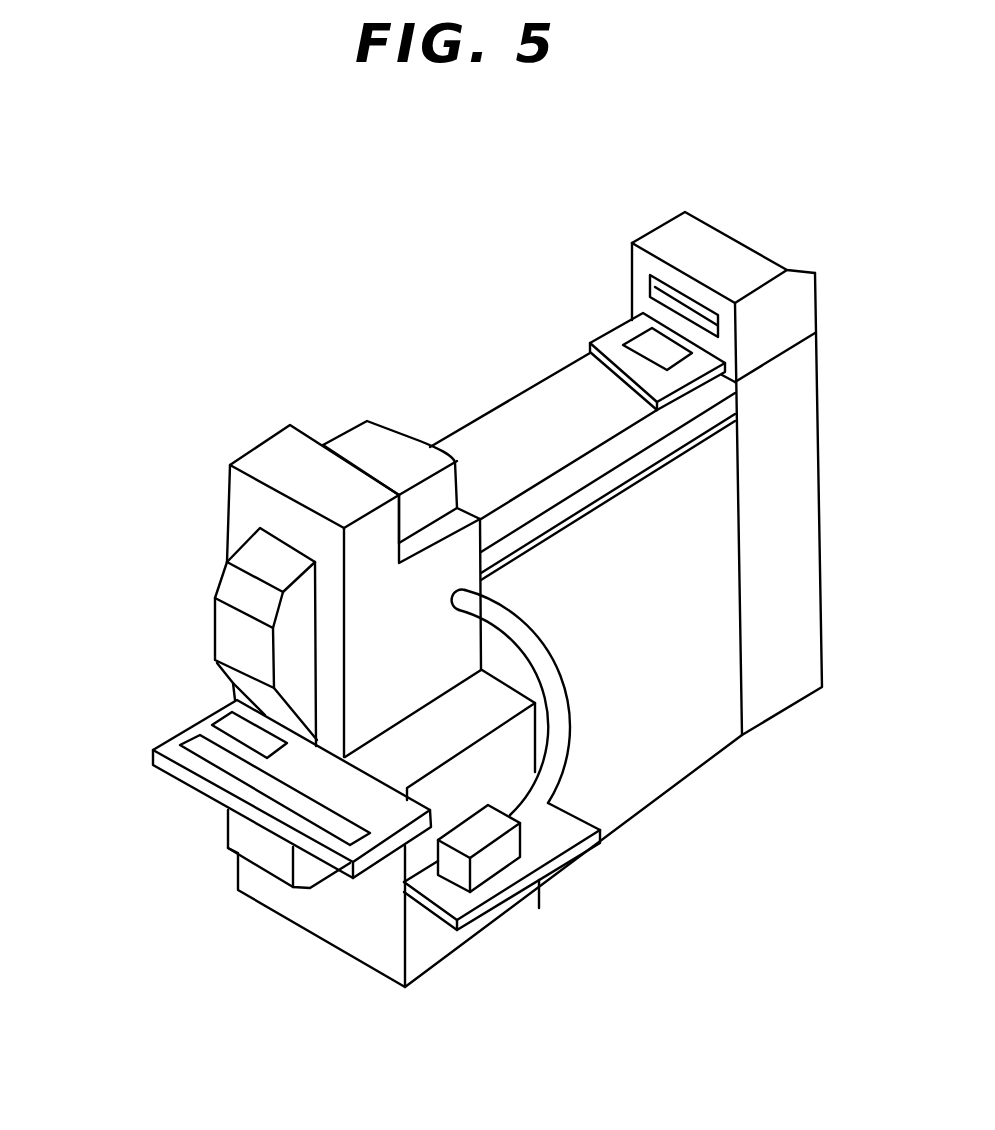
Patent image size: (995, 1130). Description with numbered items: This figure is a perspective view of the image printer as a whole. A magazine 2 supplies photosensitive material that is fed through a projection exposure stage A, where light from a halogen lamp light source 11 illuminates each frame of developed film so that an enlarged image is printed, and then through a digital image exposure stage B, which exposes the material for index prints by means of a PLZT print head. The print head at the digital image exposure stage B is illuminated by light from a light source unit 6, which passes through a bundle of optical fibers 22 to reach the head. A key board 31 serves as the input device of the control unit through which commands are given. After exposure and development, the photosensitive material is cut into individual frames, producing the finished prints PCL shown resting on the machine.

The projection exposure stage A is at (228, 489).
The magazine 2 is at (350, 425).
The prints PCL is at (630, 345).
The digital image exposure stage B is at (518, 597).
The bundle of optical fibers 22 is at (570, 745).
The light source unit 6 is at (503, 855).
The key board 31 is at (165, 738).
The light source 11 is at (235, 848).